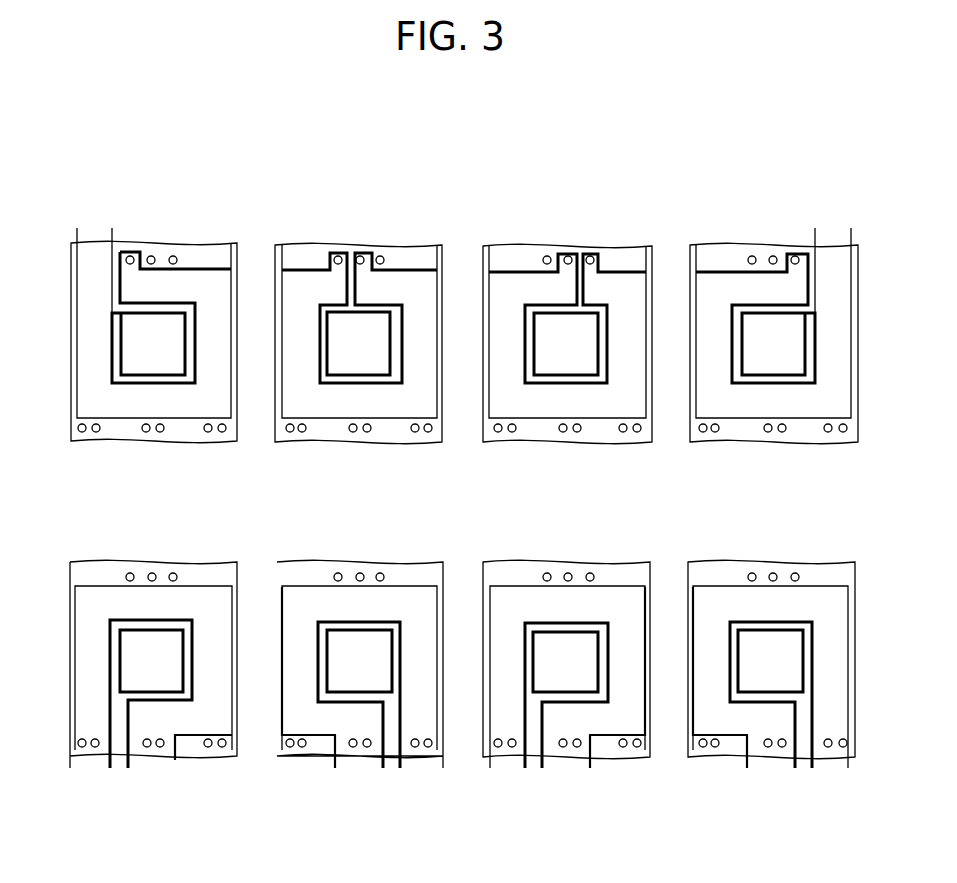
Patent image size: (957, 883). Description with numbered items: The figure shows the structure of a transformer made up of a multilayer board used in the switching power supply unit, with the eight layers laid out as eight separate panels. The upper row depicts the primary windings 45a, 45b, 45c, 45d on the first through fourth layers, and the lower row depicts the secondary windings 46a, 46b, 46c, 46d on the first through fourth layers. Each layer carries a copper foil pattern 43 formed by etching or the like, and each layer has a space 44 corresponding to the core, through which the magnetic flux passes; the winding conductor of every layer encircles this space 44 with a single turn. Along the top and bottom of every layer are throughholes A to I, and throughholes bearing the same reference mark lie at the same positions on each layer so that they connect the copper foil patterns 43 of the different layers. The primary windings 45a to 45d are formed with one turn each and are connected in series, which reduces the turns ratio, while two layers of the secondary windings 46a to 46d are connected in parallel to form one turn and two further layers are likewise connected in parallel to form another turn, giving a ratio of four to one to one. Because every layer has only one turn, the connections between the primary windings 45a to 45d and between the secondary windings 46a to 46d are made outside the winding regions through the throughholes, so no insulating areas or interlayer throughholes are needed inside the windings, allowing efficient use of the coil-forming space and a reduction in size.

The copper foil pattern 43 is at (213, 280).
The space 44 is at (138, 340).
The primary winding 45a is at (97, 218).
The primary winding 45b is at (402, 215).
The primary winding 45c is at (613, 215).
The primary winding 45d is at (715, 227).
The secondary winding 46a is at (97, 762).
The secondary winding 46b is at (305, 762).
The secondary winding 46c is at (623, 765).
The secondary winding 46d is at (830, 767).